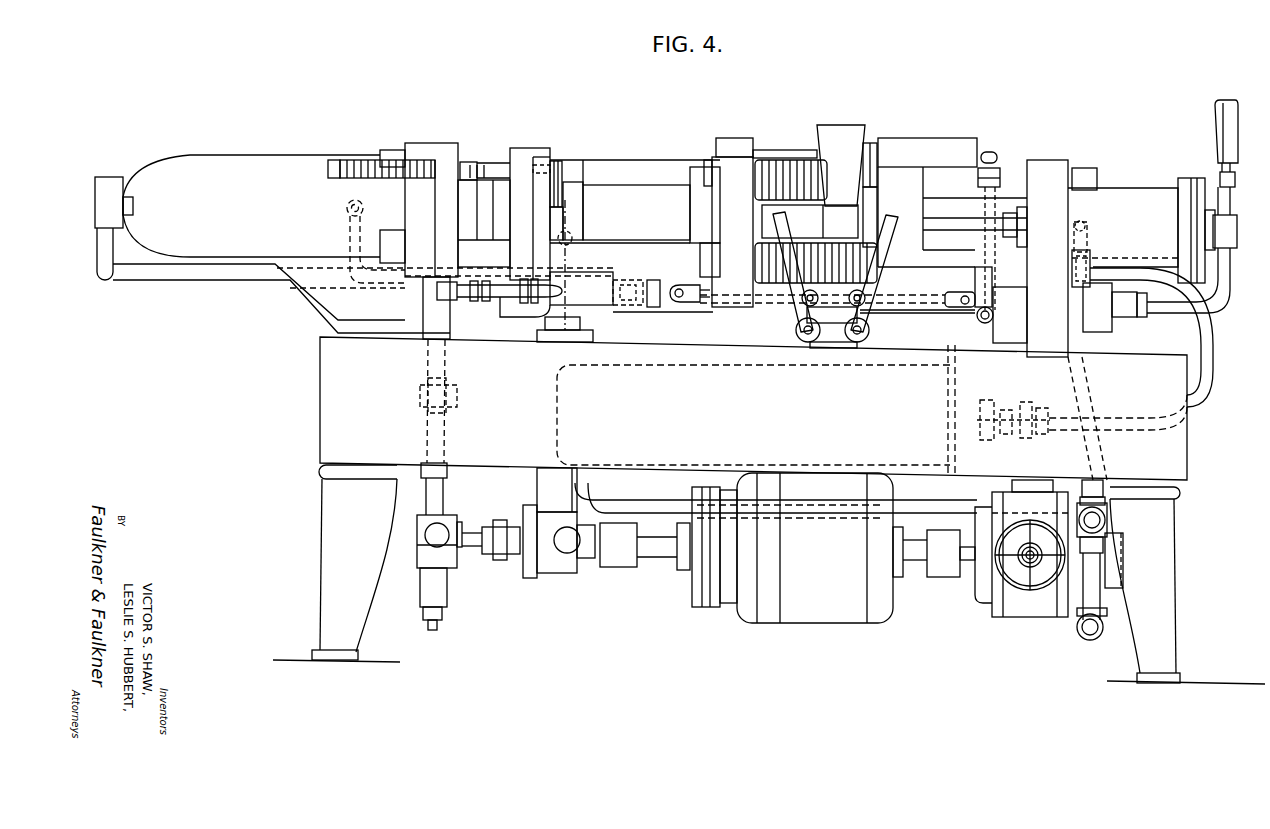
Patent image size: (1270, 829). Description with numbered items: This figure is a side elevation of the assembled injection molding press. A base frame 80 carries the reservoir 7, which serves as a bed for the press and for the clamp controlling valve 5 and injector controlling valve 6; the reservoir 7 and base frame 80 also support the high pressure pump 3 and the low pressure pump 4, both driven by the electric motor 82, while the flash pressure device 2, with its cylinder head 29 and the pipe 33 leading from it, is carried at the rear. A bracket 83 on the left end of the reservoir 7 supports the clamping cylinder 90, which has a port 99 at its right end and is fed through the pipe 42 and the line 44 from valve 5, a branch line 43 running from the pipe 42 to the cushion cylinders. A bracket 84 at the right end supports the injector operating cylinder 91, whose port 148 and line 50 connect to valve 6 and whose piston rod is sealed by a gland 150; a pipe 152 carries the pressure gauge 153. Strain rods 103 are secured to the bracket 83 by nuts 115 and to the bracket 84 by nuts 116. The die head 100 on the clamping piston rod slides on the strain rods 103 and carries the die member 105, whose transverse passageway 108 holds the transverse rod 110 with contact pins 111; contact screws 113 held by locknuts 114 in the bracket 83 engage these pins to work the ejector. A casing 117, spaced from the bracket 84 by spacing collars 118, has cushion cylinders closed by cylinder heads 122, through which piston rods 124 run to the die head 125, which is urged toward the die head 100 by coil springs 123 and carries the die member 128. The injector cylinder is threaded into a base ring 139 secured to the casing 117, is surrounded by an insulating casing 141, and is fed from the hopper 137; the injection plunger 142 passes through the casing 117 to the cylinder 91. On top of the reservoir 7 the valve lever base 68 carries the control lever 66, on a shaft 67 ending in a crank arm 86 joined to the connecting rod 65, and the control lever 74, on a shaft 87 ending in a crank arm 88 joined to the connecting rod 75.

The flash pressure device 2 is at (756, 409).
The high pressure variable delivery pump 3 is at (1020, 615).
The low pressure constant delivery pump 4 is at (556, 580).
The clamp controlling valve 5 is at (611, 315).
The injector controlling valve 6 is at (1010, 325).
The reservoir 7 is at (320, 372).
The cylinder head 29 is at (977, 392).
The pipe 33 is at (1212, 345).
The pipe 42 is at (218, 282).
The branch line 43 is at (992, 270).
The line 44 is at (496, 301).
The line 50 is at (1170, 312).
The connecting rod 65 is at (922, 292).
The control lever 66 is at (885, 250).
The shaft 67 is at (869, 329).
The valve lever base 68 is at (832, 347).
The control lever 74 is at (797, 221).
The connecting rod 75 is at (700, 305).
The base frame 80 is at (322, 568).
The electric motor 82 is at (853, 618).
The bracket 83 is at (432, 145).
The bracket 84 is at (1058, 168).
The crank arm 86 is at (850, 298).
The shaft 87 is at (796, 328).
The crank arm 88 is at (819, 320).
The clamping cylinder 90 is at (288, 168).
The injector operating cylinder 91 is at (1148, 195).
The port 99 is at (346, 213).
The die head 100 is at (528, 147).
The strain rods 103 is at (645, 165).
The die member 105 is at (581, 203).
The transverse passageway 108 is at (583, 210).
The transverse rod 110 is at (560, 162).
The contact pins 111 is at (537, 185).
The contact screws 113 is at (345, 178).
The locknuts 114 is at (466, 162).
The nuts 115 is at (395, 150).
The nuts 116 is at (1086, 168).
The casing 117 is at (917, 143).
The spacing collars 118 is at (1010, 175).
The cylinder heads 122 is at (872, 143).
The coil springs 123 is at (793, 160).
The piston rods 124 is at (767, 150).
The die head 125 is at (735, 140).
The die member 128 is at (697, 175).
The hopper 137 is at (848, 125).
The base ring 139 is at (876, 195).
The insulating casing 141 is at (820, 218).
The injection plunger 142 is at (955, 210).
The port 148 is at (1090, 225).
The gland 150 is at (1072, 260).
The pipe 152 is at (1236, 205).
The pressure gauge 153 is at (1215, 130).